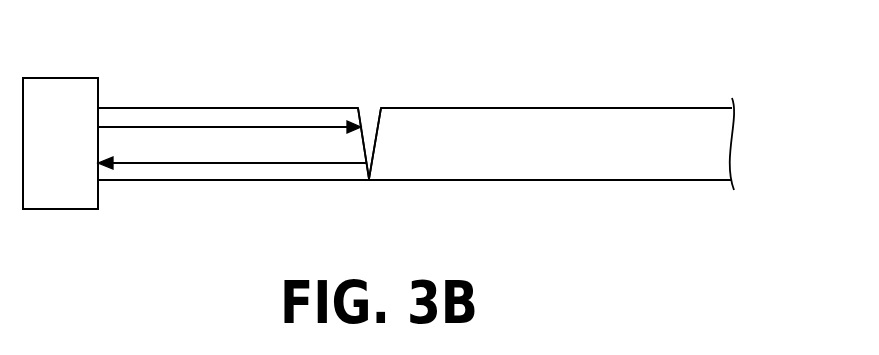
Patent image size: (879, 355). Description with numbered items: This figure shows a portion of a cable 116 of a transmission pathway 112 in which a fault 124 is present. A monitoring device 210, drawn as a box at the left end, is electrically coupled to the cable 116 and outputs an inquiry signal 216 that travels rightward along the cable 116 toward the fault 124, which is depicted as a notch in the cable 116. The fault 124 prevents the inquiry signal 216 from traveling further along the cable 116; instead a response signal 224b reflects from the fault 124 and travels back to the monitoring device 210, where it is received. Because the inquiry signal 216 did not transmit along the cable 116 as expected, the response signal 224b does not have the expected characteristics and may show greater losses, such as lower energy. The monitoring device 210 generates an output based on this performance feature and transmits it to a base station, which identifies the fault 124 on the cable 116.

The transmission pathway 112 is at (776, 107).
The fault 124 is at (381, 93).
The cable 116 is at (665, 108).
The monitoring device 210 is at (63, 78).
The inquiry signal 216 is at (207, 127).
The response signal 224b is at (204, 164).